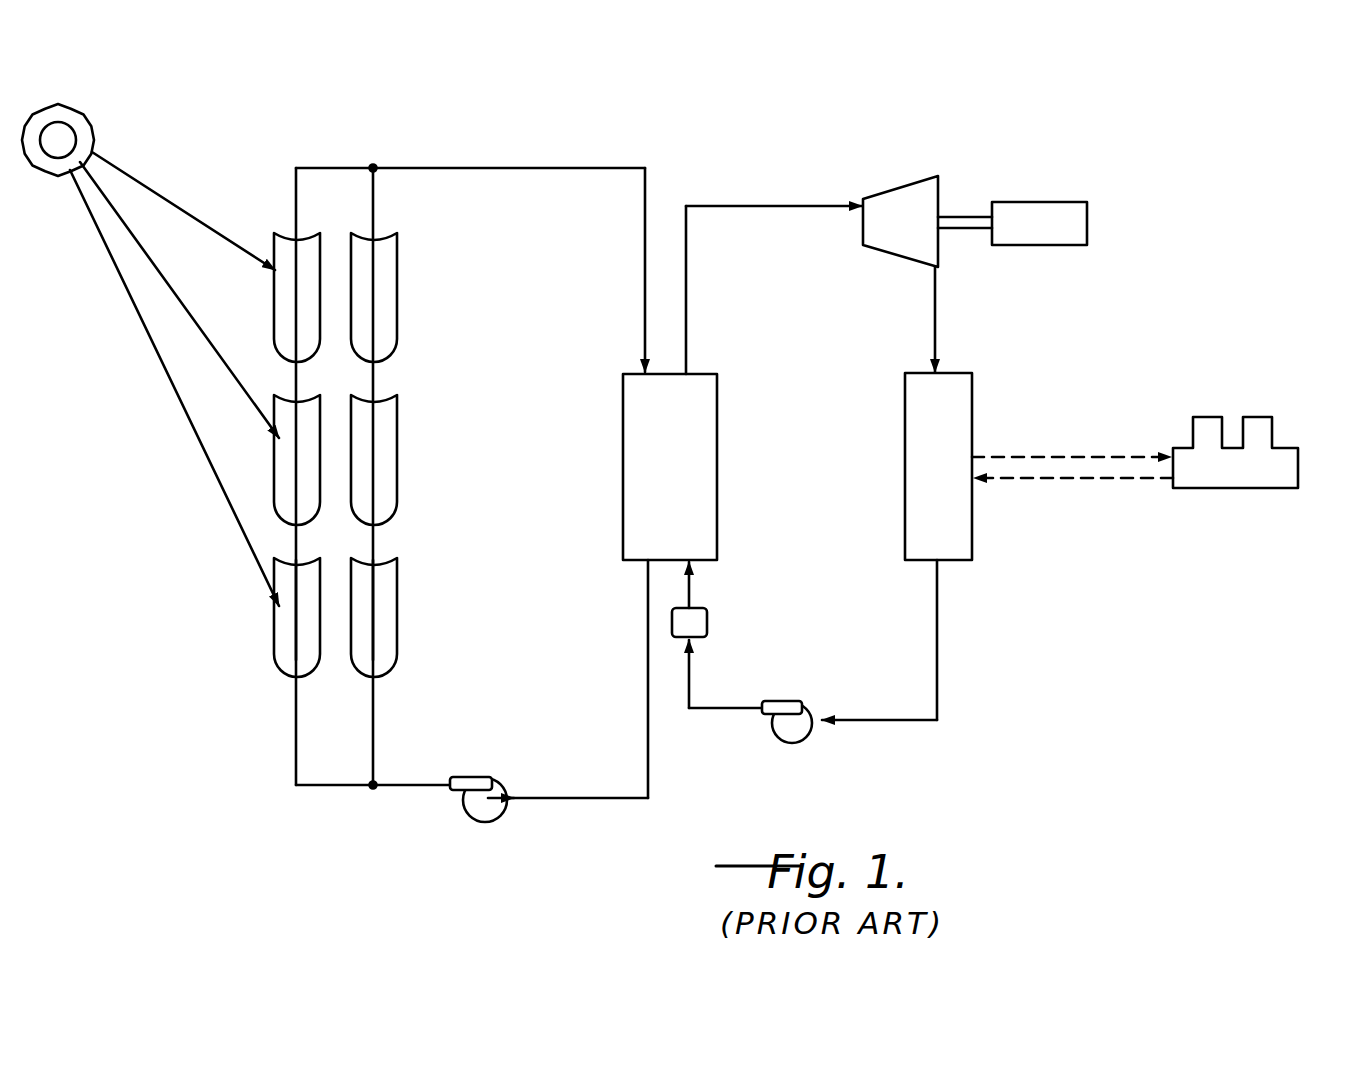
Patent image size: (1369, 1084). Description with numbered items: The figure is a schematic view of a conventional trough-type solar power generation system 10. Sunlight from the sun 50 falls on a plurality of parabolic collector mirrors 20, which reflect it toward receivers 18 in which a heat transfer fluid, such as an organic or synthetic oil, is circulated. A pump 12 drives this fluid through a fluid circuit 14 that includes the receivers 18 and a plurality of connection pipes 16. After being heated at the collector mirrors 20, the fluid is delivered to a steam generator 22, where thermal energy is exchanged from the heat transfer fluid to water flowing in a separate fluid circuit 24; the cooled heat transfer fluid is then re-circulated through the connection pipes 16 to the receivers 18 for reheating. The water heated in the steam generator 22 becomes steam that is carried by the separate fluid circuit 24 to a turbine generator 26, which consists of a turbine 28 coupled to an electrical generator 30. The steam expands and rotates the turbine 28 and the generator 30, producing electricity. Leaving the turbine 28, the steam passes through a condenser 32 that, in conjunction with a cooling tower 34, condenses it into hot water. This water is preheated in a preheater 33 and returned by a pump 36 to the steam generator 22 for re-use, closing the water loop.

The trough-type solar power generation system 10 is at (1236, 195).
The pump 12 is at (490, 778).
The fluid circuit 14 is at (484, 165).
The connection pipes 16 is at (342, 168).
The receivers 18 is at (296, 620).
The parabolic collector mirrors 20 is at (279, 298).
The steam generator 22 is at (708, 490).
The separate fluid circuit 24 is at (774, 197).
The turbine generator 26 is at (1013, 188).
The turbine 28 is at (906, 250).
The electrical generator 30 is at (1040, 244).
The condenser 32 is at (962, 406).
The preheater 33 is at (697, 620).
The cooling tower 34 is at (1222, 490).
The pump 36 is at (800, 702).
The sun 50 is at (83, 127).